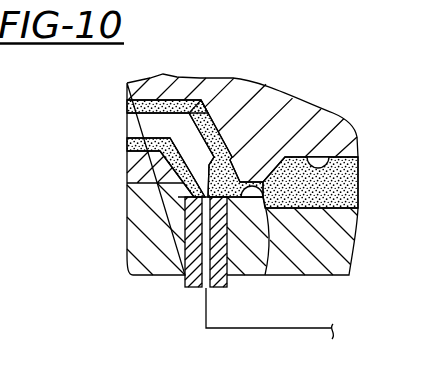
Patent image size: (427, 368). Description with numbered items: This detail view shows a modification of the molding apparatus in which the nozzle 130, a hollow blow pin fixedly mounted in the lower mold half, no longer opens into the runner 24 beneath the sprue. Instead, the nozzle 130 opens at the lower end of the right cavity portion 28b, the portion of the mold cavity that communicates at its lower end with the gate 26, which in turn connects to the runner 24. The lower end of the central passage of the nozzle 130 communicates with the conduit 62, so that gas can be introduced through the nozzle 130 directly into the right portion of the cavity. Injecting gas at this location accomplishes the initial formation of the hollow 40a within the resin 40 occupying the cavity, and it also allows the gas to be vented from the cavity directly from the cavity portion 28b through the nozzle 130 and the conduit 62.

The resin 40 is at (152, 102).
The hollow 40a is at (204, 116).
The right portion of the mold cavity 28b is at (221, 163).
The runner 24 is at (336, 166).
The gate 26 is at (267, 257).
The nozzle 130 is at (190, 289).
The conduit 62 is at (313, 328).